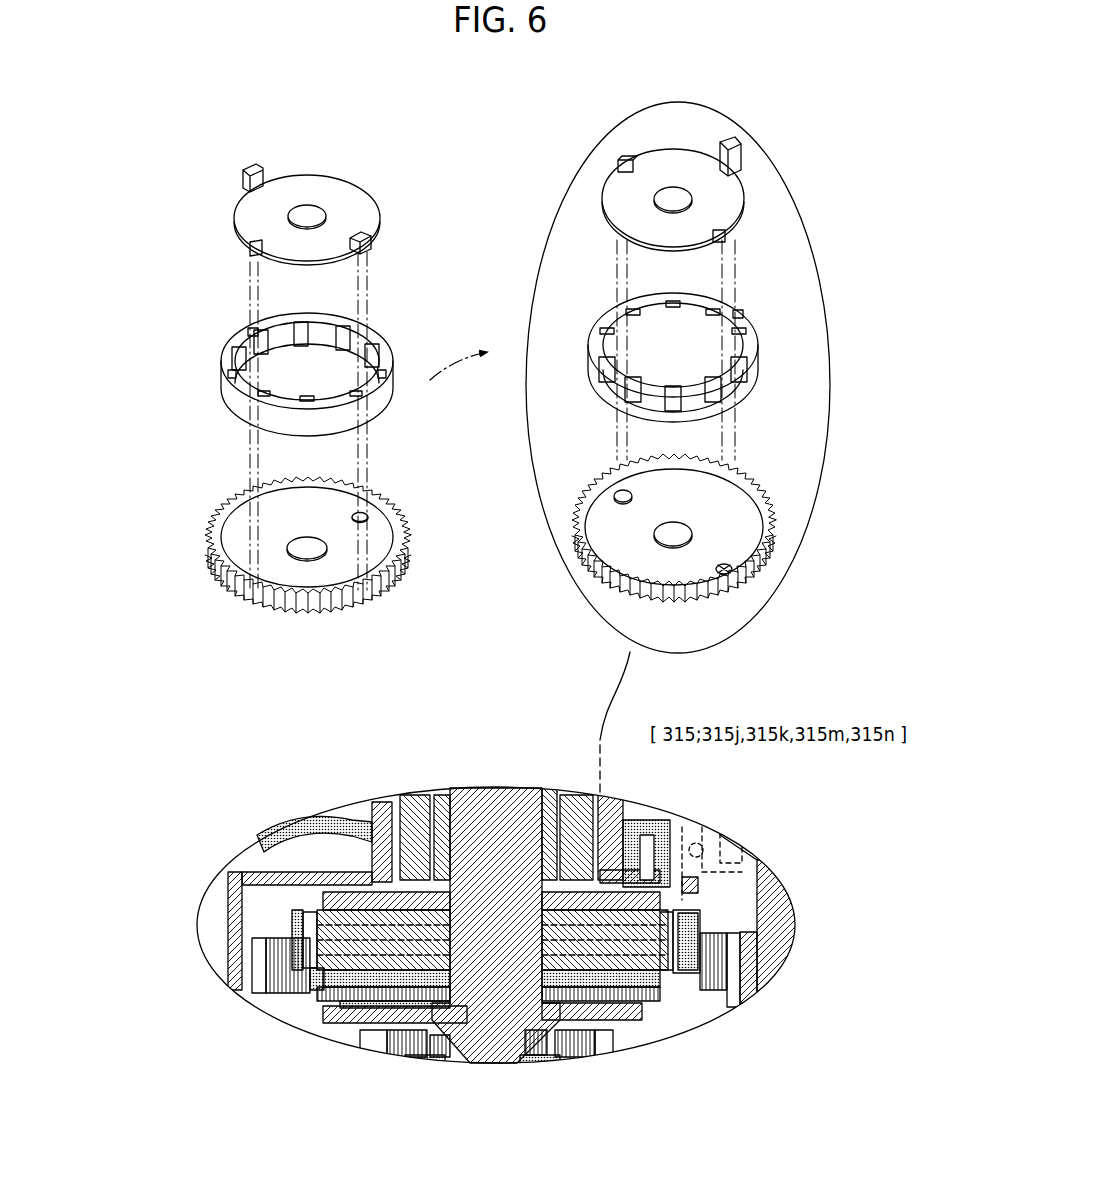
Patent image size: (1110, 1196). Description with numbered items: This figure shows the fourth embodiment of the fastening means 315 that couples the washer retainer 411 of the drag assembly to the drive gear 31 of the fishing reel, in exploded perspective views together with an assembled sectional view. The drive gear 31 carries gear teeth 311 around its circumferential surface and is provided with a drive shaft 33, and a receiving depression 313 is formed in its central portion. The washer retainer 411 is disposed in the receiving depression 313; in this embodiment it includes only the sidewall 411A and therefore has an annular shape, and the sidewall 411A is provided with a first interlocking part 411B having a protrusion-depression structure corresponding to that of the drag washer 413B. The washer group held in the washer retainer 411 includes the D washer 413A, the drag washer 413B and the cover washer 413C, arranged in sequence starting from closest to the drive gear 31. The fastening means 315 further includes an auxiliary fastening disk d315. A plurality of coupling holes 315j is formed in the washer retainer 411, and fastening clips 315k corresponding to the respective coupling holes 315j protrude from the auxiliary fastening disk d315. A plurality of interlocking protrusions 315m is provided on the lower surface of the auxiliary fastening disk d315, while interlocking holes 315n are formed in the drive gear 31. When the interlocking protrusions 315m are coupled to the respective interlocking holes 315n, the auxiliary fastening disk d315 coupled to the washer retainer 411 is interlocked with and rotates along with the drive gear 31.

The drive gear 31 is at (200, 588).
The gear teeth 311 is at (395, 577).
The receiving depression 313 is at (315, 512).
The fastening means 315 is at (673, 200).
The auxiliary fastening disk d315 is at (222, 203).
The coupling holes 315j is at (255, 333).
The fastening clips 315k is at (257, 163).
The interlocking protrusions 315m is at (252, 247).
The interlocking holes 315n is at (365, 515).
The drive shaft 33 is at (485, 835).
The washer retainer 411 is at (405, 350).
The sidewall 411A is at (372, 407).
The first interlocking part 411B is at (345, 332).
The D washer 413A is at (330, 920).
The drag washer 413B is at (650, 940).
The cover washer 413C is at (342, 898).